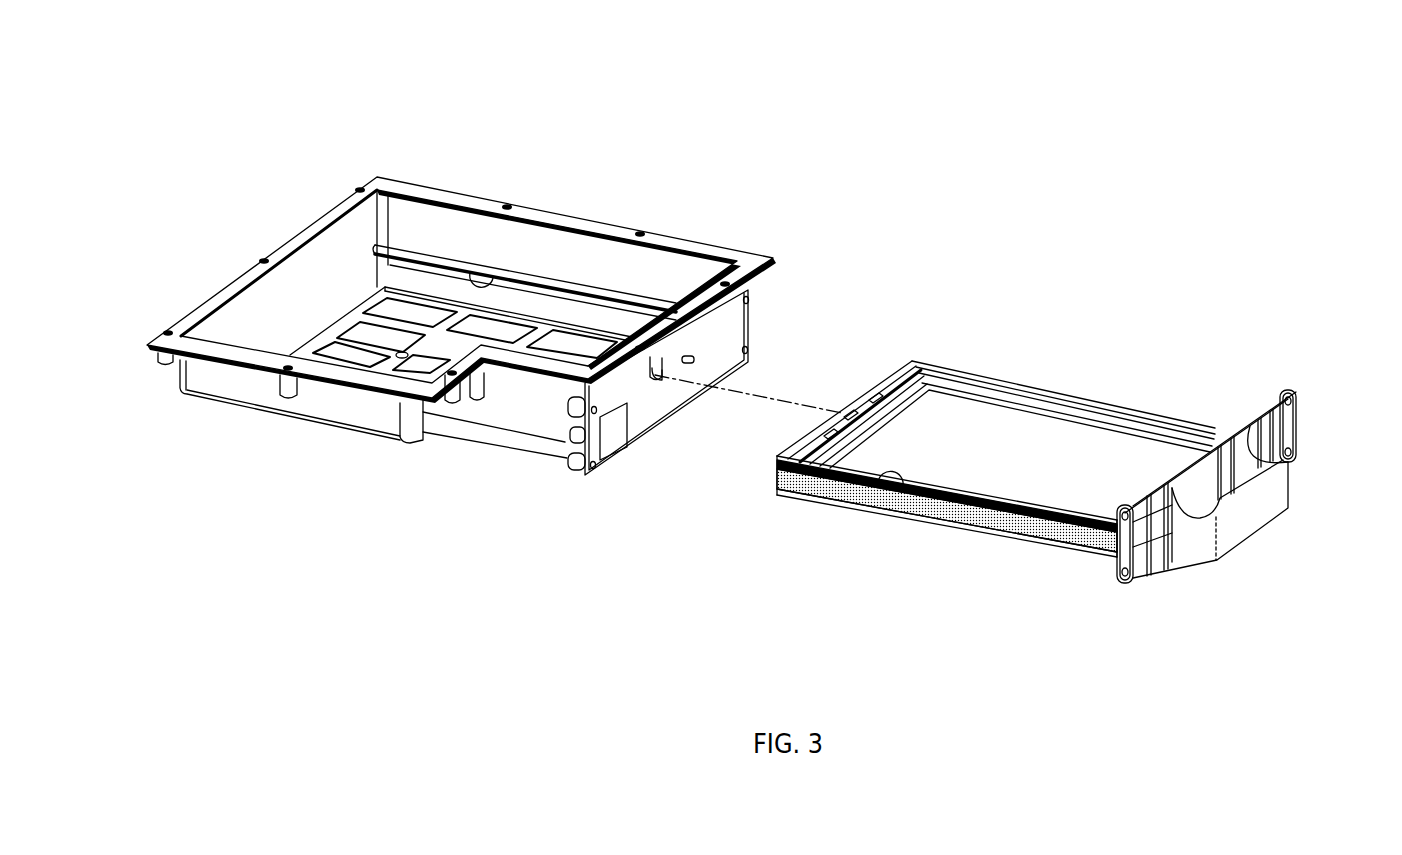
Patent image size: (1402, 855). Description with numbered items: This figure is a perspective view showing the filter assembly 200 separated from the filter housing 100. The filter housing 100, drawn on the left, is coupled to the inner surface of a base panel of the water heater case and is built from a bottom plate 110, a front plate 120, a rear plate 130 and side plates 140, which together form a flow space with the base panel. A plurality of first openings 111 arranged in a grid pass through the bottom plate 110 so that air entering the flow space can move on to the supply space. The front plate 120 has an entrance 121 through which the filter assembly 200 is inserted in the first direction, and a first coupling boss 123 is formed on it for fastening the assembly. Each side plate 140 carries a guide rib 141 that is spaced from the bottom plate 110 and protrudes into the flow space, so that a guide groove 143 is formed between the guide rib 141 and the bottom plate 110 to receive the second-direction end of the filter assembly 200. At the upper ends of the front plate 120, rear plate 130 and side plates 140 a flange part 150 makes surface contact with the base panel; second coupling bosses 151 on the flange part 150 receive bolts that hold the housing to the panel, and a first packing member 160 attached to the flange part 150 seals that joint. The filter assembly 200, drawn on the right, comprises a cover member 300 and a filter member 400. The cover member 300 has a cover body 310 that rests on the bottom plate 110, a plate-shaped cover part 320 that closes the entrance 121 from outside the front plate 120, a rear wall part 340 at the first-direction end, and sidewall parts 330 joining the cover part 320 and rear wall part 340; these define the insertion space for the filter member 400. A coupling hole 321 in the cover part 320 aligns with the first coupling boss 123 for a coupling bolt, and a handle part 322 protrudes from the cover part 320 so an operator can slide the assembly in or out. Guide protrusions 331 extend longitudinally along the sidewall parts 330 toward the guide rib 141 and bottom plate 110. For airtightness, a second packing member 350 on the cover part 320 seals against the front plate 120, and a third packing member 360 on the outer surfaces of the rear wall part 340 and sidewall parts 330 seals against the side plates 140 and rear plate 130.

The filter housing 100 is at (309, 124).
The bottom plate 110 is at (433, 333).
The first opening 111 is at (372, 340).
The front plate 120 is at (607, 398).
The entrance 121 is at (732, 336).
The first coupling boss 123 is at (575, 410).
The rear plate 130 is at (297, 272).
The side plate 140 is at (620, 255).
The guide rib 141 is at (420, 246).
The guide groove 143 is at (481, 272).
The flange part 150 is at (775, 262).
The second coupling boss 151 is at (568, 218).
The first packing member 160 is at (757, 261).
The filter assembly 200 is at (1256, 148).
The cover member 300 is at (1080, 316).
The cover body 310 is at (1047, 442).
The cover part 320 is at (1295, 414).
The coupling hole 321 is at (1213, 418).
The handle part 322 is at (1257, 520).
The sidewall part 330 is at (817, 483).
The guide protrusion 331 is at (1123, 400).
The rear wall part 340 is at (887, 378).
The second packing member 350 is at (1130, 494).
The third packing member 360 is at (965, 518).
The filter member 400 is at (948, 407).